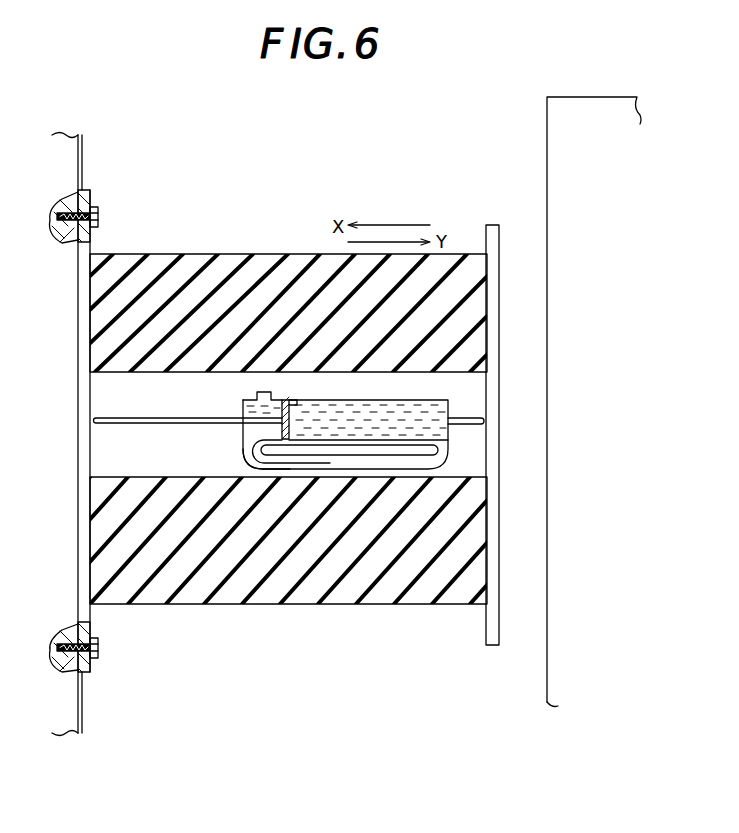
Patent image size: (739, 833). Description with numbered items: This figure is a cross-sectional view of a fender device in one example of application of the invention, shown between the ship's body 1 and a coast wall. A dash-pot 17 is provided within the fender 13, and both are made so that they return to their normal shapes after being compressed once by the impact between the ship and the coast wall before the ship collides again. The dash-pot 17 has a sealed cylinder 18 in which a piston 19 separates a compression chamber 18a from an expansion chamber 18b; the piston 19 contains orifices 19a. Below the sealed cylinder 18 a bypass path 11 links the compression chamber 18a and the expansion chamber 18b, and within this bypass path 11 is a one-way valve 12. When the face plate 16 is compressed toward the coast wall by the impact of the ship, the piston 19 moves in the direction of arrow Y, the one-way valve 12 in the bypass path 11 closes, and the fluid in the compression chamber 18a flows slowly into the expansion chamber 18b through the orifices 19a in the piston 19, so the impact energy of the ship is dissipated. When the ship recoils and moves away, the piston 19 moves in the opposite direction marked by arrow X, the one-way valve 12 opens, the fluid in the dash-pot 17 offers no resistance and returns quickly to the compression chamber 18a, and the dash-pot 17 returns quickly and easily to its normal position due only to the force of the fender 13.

The ship's body 1 is at (586, 151).
The bypass path 11 is at (417, 463).
The one-way valve 12 is at (349, 458).
The fender 13 is at (459, 606).
The face plate 16 is at (492, 224).
The dash-pot 17 is at (280, 469).
The sealed cylinder 18 is at (450, 410).
The compression chamber 18a is at (383, 413).
The expansion chamber 18b is at (243, 412).
The piston 19 is at (281, 428).
The orifices 19a is at (290, 406).